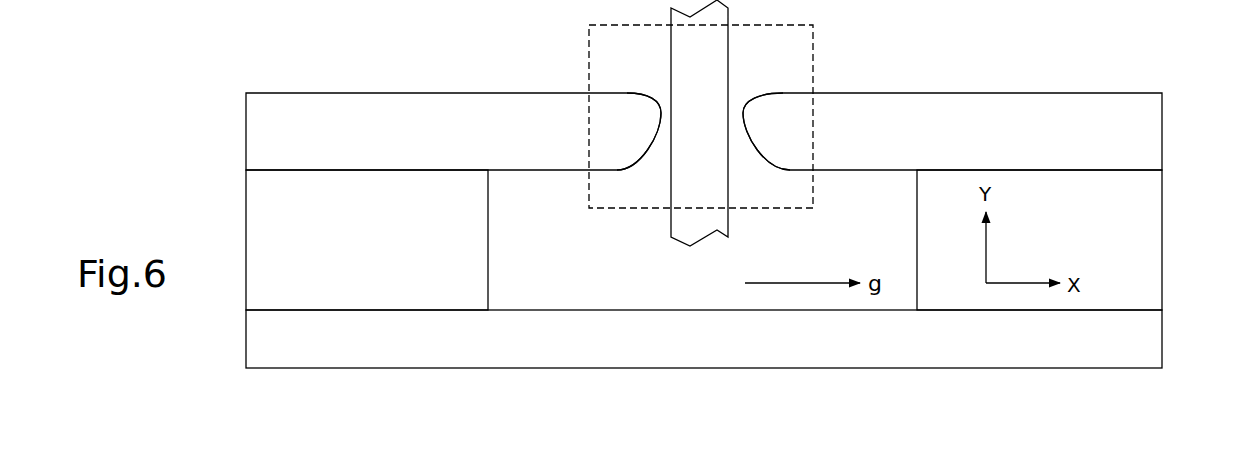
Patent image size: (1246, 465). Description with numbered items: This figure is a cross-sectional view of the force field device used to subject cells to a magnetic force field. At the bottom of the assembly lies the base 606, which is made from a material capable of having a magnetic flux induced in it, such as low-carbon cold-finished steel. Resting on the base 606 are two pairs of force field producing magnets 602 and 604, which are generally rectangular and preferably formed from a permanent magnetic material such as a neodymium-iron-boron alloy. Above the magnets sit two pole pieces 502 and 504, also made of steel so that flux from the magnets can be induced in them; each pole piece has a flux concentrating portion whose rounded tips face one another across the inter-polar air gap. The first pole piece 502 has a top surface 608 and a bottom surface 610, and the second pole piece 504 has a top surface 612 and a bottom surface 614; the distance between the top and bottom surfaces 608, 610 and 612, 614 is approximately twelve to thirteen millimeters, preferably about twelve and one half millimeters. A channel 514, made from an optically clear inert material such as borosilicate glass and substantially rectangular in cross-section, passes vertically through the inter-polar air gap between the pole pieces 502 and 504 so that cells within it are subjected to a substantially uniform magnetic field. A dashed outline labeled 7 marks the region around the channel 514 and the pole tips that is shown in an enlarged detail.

The pole piece 502 is at (336, 93).
The pole piece 504 is at (1083, 93).
The channel 514 is at (723, 63).
The detail region shown in Fig. 7 is at (813, 61).
The force field producing magnets 602 is at (377, 253).
The force field producing magnets 604 is at (1097, 233).
The base 606 is at (726, 348).
The top surface 608 is at (558, 93).
The bottom surface 610 is at (537, 171).
The top surface 612 is at (926, 93).
The bottom surface 614 is at (873, 171).